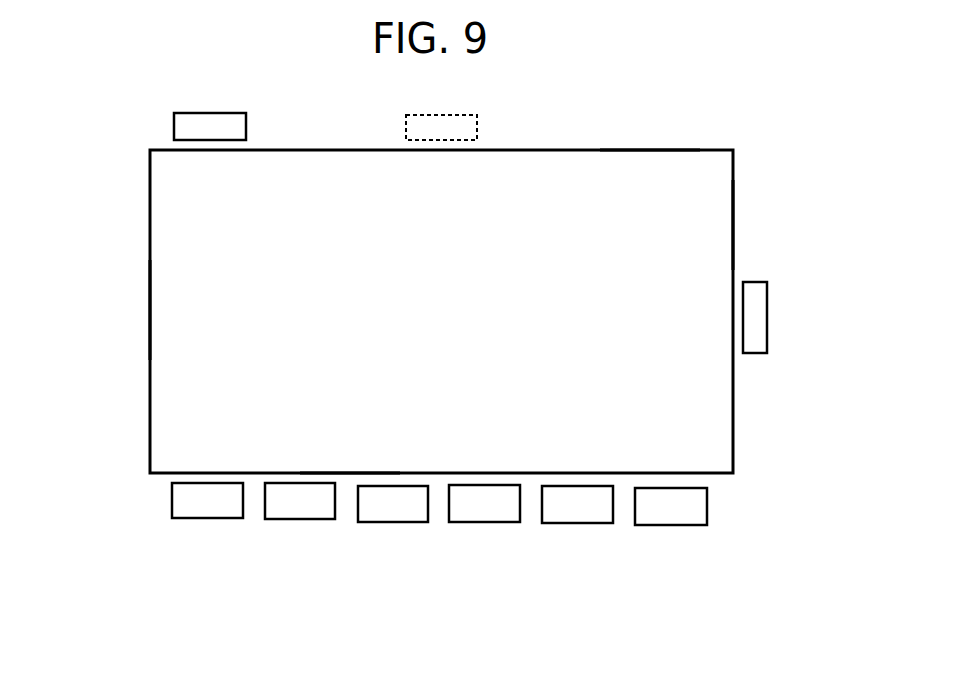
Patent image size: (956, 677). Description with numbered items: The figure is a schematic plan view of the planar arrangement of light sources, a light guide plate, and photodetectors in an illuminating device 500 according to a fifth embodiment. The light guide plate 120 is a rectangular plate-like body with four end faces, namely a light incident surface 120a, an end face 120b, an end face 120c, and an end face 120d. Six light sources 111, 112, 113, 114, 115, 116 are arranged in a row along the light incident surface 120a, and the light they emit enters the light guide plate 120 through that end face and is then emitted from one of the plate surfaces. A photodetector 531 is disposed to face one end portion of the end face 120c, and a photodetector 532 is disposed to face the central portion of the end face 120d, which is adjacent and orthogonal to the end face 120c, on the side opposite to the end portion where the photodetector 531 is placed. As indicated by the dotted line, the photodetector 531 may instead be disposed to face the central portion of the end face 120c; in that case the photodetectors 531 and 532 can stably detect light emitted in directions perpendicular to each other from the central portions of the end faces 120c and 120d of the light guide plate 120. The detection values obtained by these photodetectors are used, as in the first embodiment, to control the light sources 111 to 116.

The illuminating device 500 is at (330, 82).
The light guide plate 120 is at (720, 424).
The light incident surface 120a is at (350, 471).
The end face 120b is at (150, 311).
The end face 120c is at (646, 150).
The end face 120d is at (733, 224).
The photodetector 531 is at (246, 127).
The photodetector 532 is at (767, 318).
The light source 111 is at (208, 518).
The light source 112 is at (300, 519).
The light source 113 is at (393, 522).
The light source 114 is at (487, 522).
The light source 115 is at (580, 523).
The light source 116 is at (672, 525).